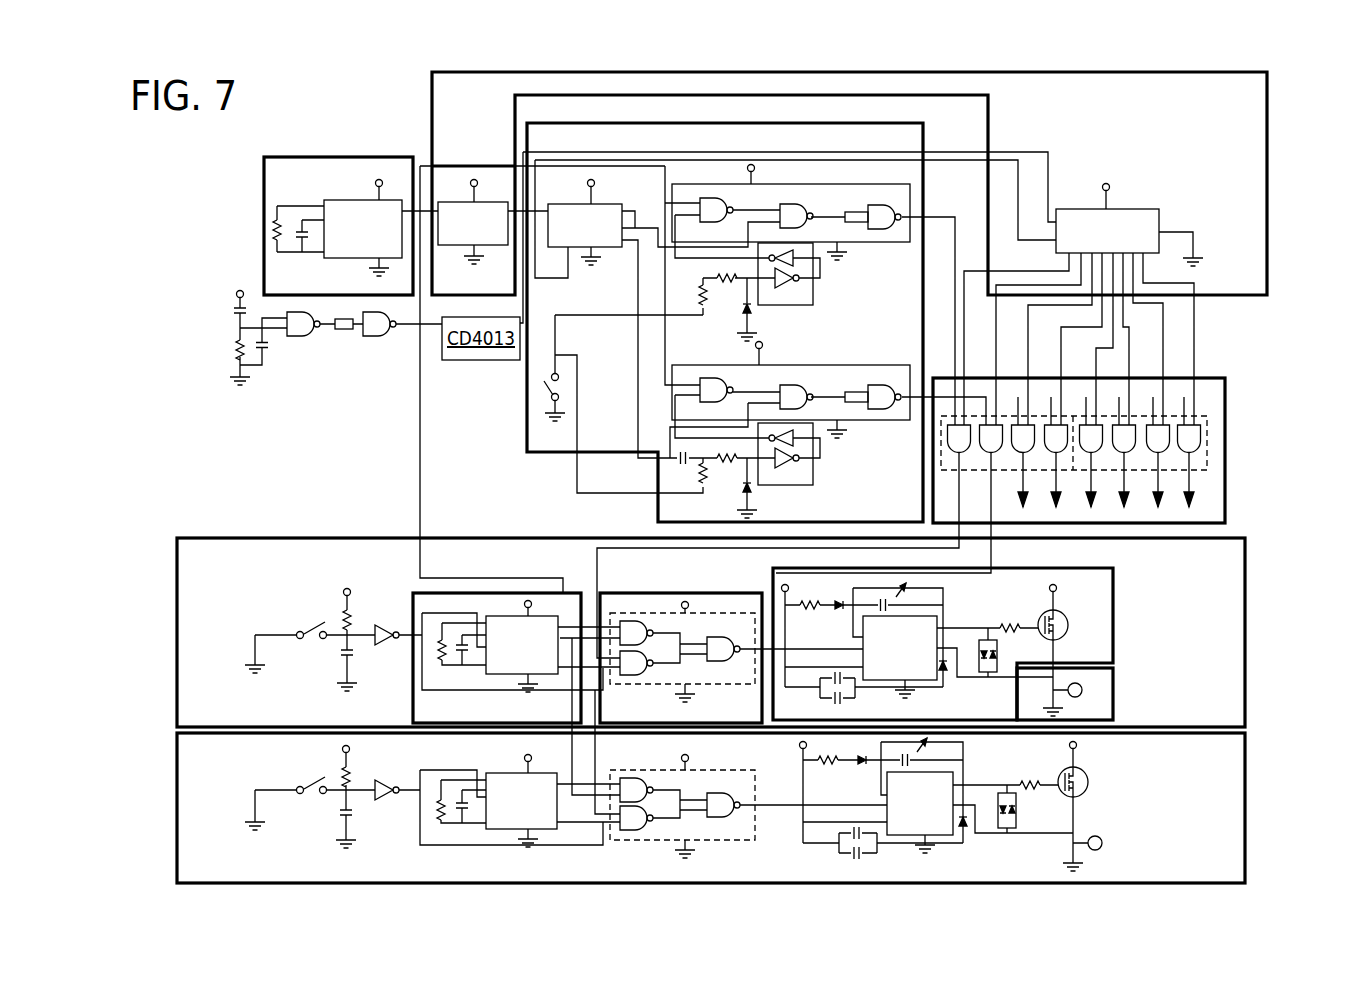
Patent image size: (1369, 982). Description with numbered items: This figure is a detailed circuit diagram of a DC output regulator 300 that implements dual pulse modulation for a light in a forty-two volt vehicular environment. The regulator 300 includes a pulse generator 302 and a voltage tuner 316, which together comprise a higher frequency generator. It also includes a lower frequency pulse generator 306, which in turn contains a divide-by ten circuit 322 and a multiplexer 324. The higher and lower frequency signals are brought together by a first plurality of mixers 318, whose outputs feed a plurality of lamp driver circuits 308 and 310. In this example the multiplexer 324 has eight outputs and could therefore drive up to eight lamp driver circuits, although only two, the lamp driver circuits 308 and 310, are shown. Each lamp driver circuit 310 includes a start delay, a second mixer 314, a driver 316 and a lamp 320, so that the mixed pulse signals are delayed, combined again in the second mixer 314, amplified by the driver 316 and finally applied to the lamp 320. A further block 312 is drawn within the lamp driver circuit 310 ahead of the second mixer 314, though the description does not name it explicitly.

The DC output regulator 300 is at (233, 269).
The pulse generator 302 is at (346, 157).
The lower frequency pulse generator 306 is at (1268, 187).
The lamp driver circuit 308 is at (1250, 828).
The lamp driver circuit 310 is at (1271, 698).
The monostable pulse circuit 312 is at (412, 596).
The second mixer 314 is at (635, 593).
The voltage tuner 316 is at (777, 122).
The first plurality of mixers 318 is at (1227, 480).
The lamp 320 is at (1115, 692).
The divide-by ten circuit 322 is at (486, 180).
The multiplexer 324 is at (1087, 217).